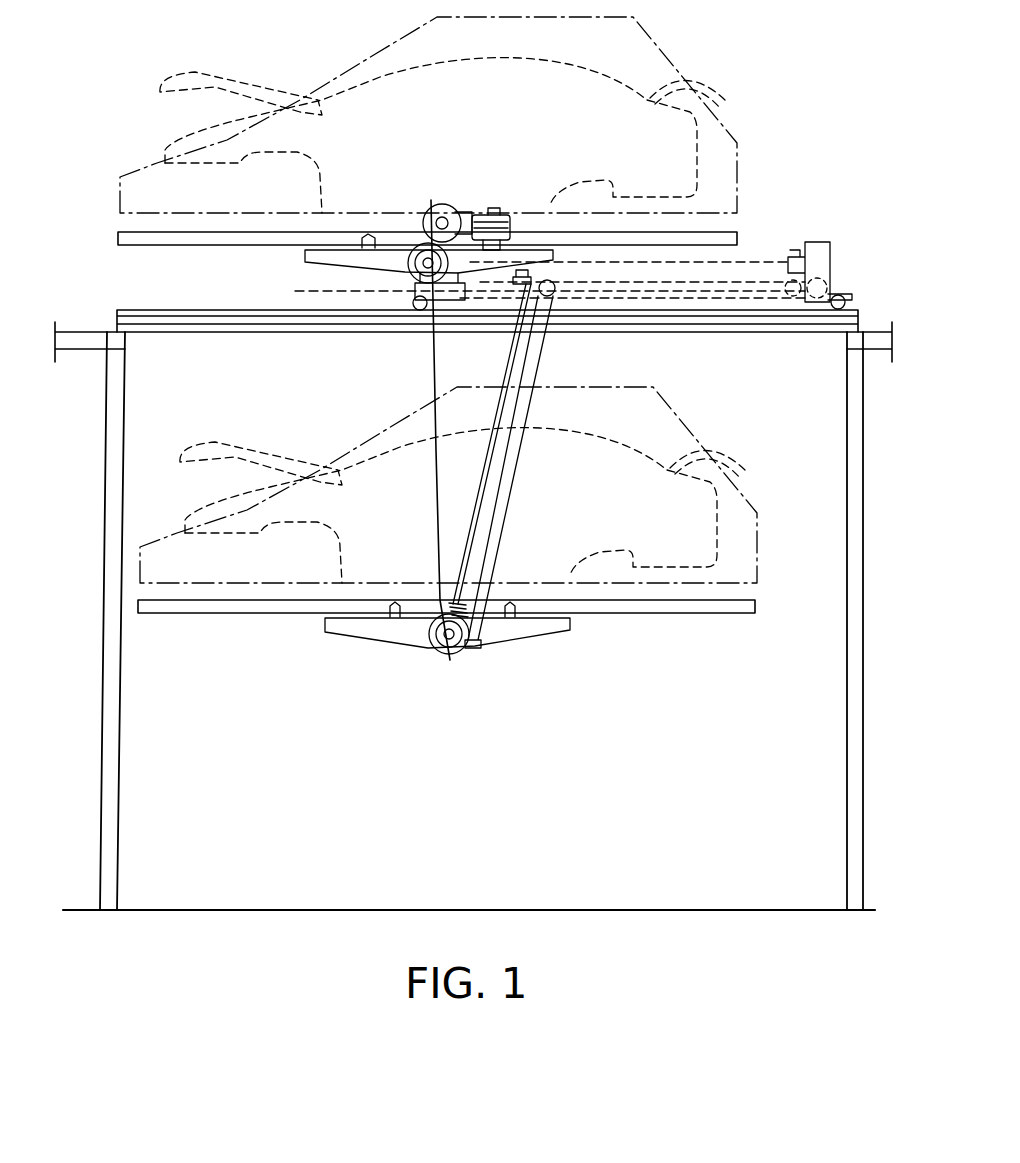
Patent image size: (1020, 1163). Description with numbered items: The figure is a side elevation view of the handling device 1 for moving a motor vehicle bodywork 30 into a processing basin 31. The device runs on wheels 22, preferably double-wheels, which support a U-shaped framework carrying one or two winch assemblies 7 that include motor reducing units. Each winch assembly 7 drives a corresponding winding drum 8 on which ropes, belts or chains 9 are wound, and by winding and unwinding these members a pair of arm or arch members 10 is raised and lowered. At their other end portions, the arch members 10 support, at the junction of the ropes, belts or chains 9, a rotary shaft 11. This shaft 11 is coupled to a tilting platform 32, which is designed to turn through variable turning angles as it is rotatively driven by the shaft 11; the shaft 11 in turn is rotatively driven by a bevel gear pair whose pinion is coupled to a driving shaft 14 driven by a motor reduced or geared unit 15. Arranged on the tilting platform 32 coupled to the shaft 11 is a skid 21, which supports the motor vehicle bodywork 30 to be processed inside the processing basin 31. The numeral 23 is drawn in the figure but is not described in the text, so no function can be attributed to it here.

The handling device 1 is at (777, 178).
The winch assembly 7 is at (441, 213).
The winding drum 8 is at (425, 220).
The ropes, belts or chains 9 is at (430, 353).
The arm or arch member 10 is at (503, 488).
The rotary shaft 11 is at (452, 652).
The driving shaft 14 is at (507, 360).
The motor reduced or geared unit 15 is at (522, 270).
The skid 21 is at (640, 233).
The wheels 22 is at (415, 301).
The pivot roller 23 is at (543, 362).
The motor vehicle bodywork 30 is at (374, 97).
The processing basin 31 is at (650, 790).
The tilting platform 32 is at (352, 262).